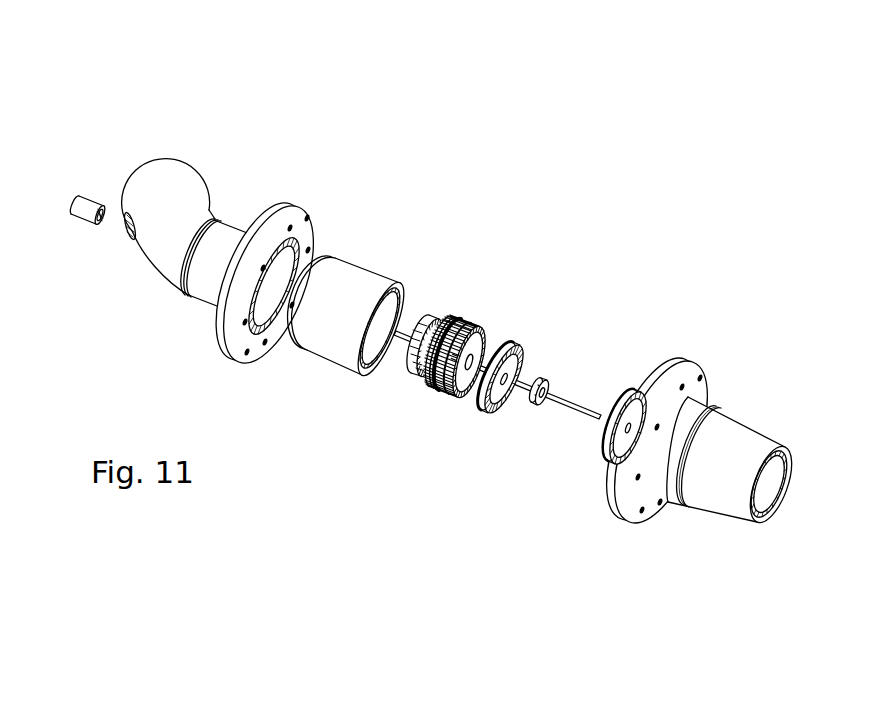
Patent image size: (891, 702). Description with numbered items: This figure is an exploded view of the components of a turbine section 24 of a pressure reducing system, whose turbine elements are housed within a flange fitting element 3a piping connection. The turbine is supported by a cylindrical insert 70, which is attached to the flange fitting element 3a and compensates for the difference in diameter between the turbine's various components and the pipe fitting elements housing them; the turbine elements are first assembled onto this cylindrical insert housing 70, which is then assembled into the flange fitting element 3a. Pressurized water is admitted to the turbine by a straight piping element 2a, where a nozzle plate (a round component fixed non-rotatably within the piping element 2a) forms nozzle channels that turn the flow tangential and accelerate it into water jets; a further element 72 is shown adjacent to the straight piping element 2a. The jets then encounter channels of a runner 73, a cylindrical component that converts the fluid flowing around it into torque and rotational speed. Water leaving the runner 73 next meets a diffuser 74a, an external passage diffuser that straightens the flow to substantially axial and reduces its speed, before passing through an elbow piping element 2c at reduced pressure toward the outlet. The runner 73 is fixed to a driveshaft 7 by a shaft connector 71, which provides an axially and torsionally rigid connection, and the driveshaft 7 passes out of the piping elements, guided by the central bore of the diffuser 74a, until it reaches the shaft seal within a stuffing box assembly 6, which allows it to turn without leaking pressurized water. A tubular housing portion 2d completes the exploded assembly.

The turbine section 24 is at (695, 215).
The stuffing box assembly 6 is at (90, 192).
The elbow piping element 2c is at (185, 168).
The tubular housing portion 2d is at (248, 227).
The flange fitting element 3a is at (300, 205).
The cylindrical insert 70 is at (352, 260).
The driveshaft 7 is at (565, 412).
The diffuser 74a is at (450, 317).
The runner 73 is at (513, 343).
The shaft connector 71 is at (541, 380).
The disc 72 is at (610, 458).
The straight piping element 2a is at (667, 507).